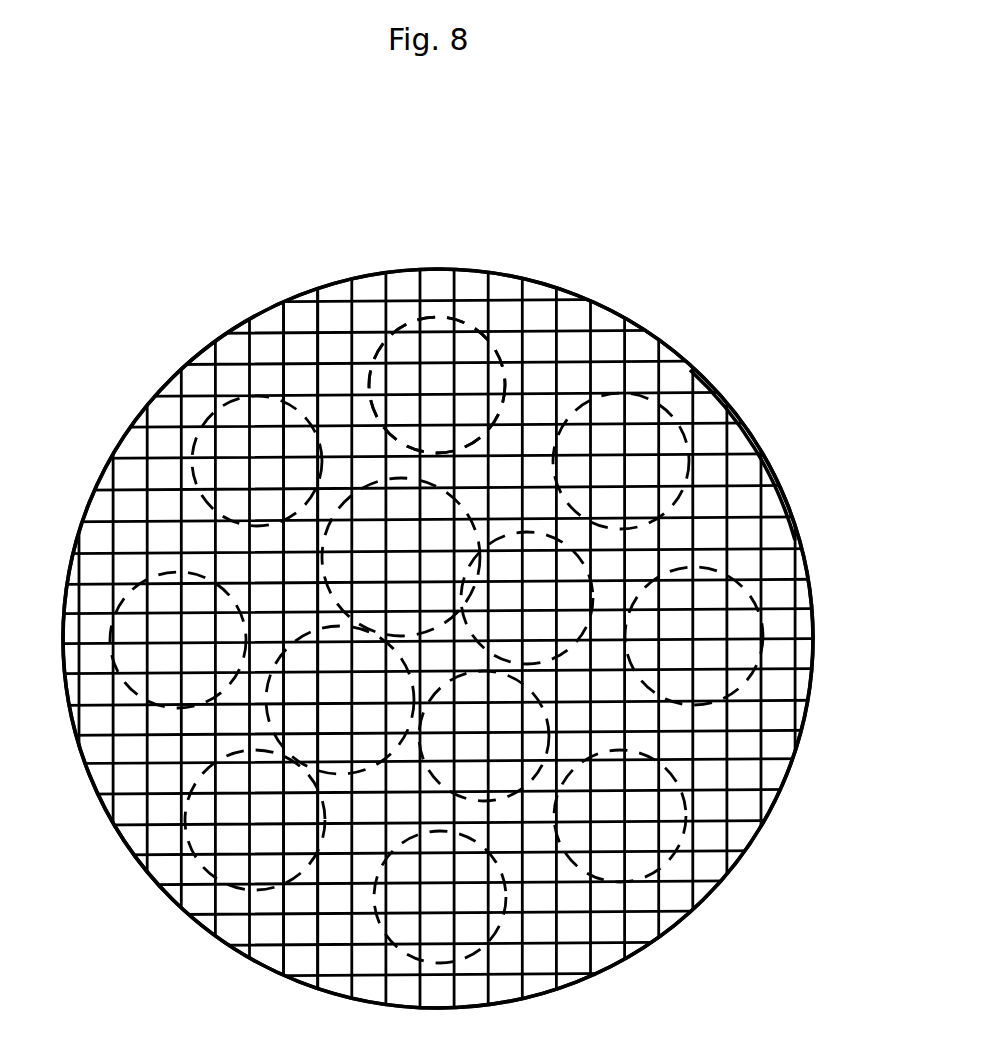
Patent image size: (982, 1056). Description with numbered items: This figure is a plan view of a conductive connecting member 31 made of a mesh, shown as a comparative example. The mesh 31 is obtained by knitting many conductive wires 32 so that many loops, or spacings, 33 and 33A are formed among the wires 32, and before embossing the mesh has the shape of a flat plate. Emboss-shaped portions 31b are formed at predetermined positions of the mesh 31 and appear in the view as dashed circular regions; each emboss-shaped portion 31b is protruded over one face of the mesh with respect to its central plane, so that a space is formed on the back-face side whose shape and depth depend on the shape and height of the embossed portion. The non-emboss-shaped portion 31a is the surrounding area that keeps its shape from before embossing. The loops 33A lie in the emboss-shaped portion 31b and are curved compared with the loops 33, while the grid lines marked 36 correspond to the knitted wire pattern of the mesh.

The conductive connecting member 31 is at (757, 410).
The non-emboss-shaped portion 31a is at (202, 347).
The emboss-shaped portion 31b is at (432, 318).
The conductive wire 32 is at (730, 437).
The loop 33 is at (512, 281).
The loop in emboss-shaped portion 33A is at (430, 365).
The grooves 36 is at (298, 292).